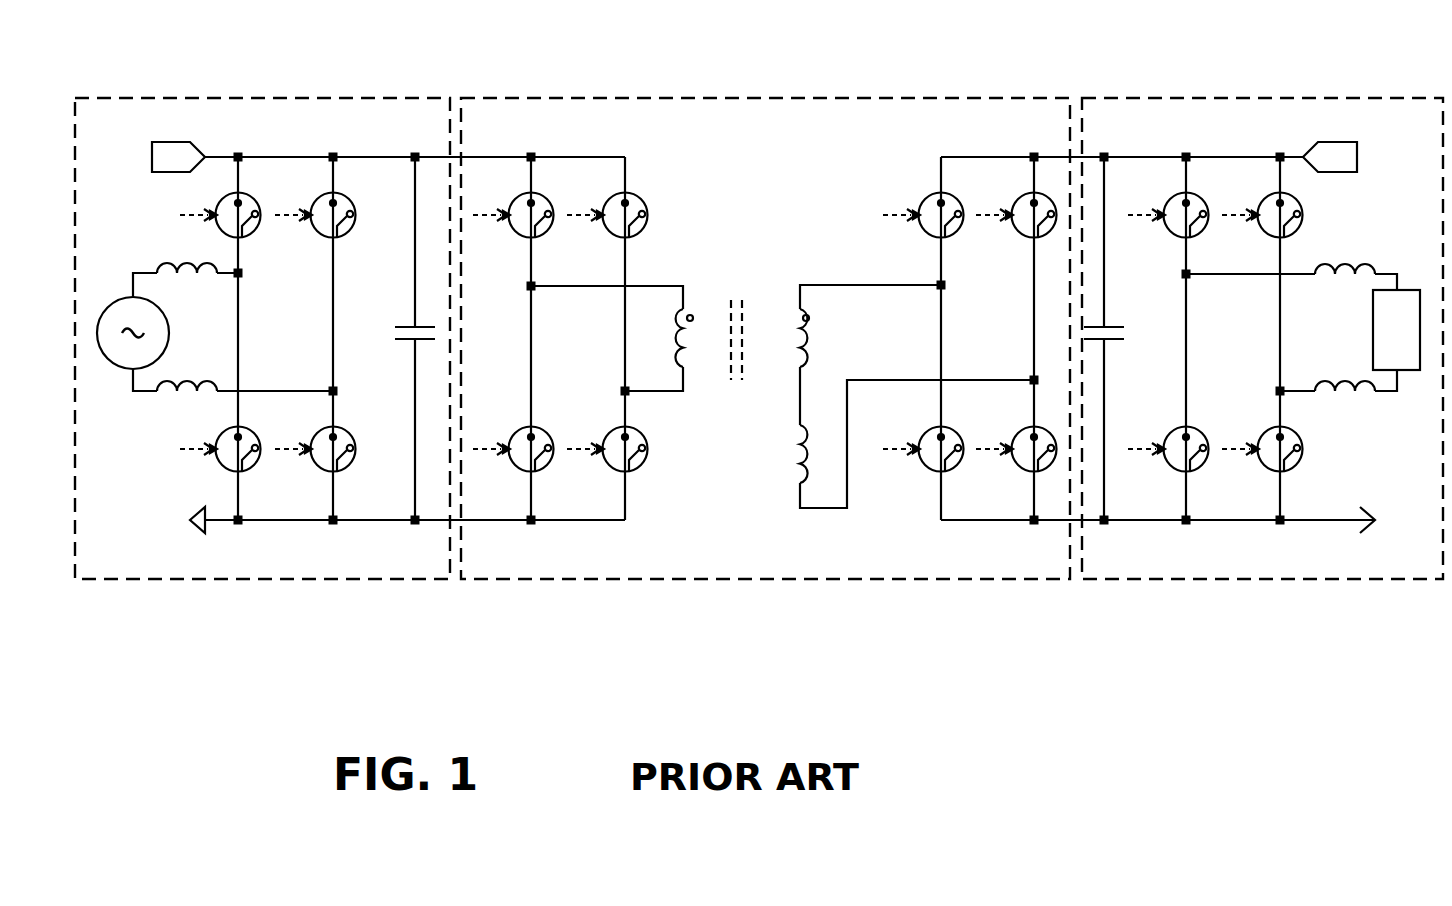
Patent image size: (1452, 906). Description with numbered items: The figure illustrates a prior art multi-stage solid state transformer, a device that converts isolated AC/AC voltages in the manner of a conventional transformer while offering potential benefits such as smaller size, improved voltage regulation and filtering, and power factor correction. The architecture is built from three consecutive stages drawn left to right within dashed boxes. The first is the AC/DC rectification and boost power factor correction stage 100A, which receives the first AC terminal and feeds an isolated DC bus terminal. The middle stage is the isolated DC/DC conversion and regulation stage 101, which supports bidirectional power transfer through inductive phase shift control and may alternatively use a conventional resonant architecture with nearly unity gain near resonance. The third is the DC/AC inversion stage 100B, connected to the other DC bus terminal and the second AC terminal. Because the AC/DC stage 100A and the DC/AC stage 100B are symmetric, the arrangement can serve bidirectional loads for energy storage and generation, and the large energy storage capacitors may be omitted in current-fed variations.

The AC/DC rectification and boost power factor correction stage 100A is at (297, 82).
The isolated DC/DC conversion and regulation stage 101 is at (782, 86).
The DC/AC inversion stage 100B is at (1235, 73).